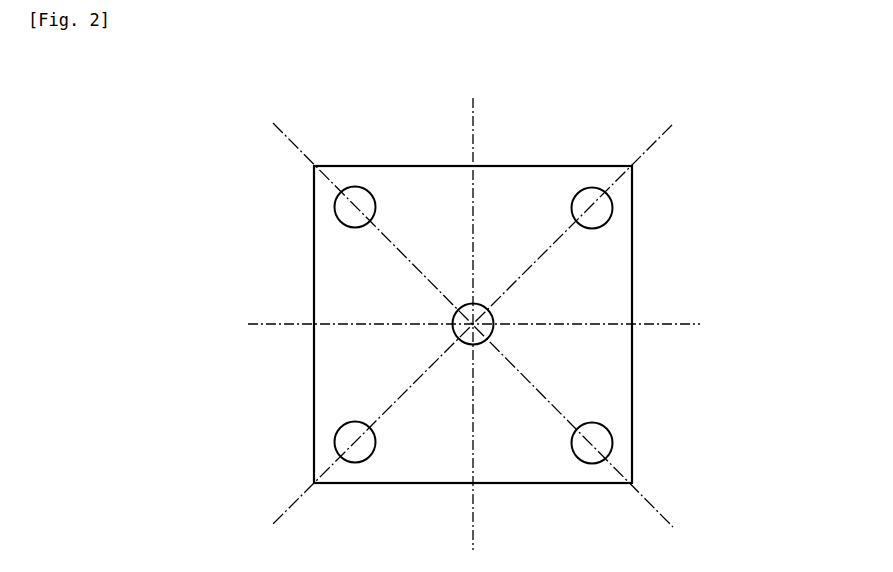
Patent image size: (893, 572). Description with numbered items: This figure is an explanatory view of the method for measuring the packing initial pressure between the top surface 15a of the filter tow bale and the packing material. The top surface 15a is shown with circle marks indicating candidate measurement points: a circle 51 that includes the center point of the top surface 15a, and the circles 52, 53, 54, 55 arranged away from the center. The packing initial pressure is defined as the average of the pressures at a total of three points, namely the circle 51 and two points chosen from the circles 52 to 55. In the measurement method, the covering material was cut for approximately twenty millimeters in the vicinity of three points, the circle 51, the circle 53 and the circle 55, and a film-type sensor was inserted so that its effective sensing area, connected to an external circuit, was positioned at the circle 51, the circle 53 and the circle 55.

The top surface 15a is at (522, 180).
The circle 51 is at (460, 319).
The circle 52 is at (370, 443).
The circle 53 is at (372, 199).
The circle 54 is at (580, 201).
The circle 55 is at (577, 445).